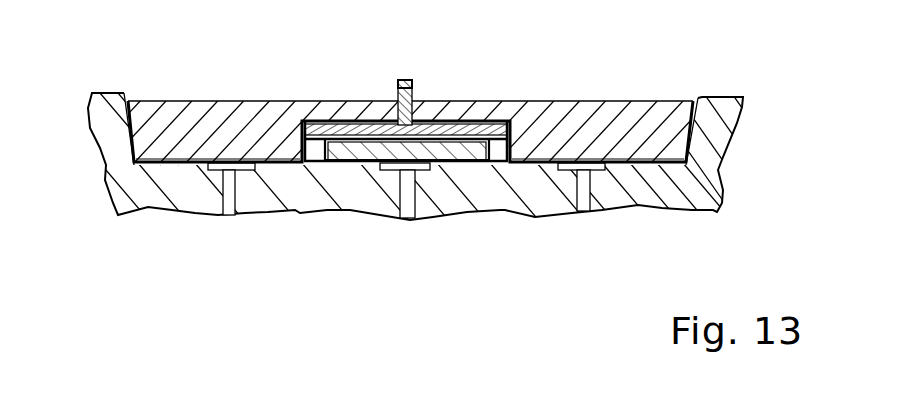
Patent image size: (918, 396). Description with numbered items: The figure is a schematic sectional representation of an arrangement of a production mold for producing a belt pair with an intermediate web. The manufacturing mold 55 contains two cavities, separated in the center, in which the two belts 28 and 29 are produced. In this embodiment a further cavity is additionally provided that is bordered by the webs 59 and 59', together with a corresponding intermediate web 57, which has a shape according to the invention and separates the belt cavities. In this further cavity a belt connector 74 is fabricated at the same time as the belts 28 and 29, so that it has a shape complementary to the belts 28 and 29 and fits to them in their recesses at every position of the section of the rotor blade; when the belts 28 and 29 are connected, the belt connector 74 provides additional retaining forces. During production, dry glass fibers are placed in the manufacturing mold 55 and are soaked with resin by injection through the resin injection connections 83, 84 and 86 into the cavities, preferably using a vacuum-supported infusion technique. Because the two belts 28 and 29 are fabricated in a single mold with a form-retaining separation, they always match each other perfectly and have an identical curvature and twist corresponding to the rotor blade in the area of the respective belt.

The belt 28 is at (223, 127).
The belt 29 is at (590, 122).
The intermediate web 57 is at (402, 82).
The web 59 is at (406, 198).
The web 59' is at (426, 207).
The belt connector 74 is at (376, 150).
The resin injection connection 83 is at (222, 197).
The resin injection connection 84 is at (588, 191).
The resin injection connection 86 is at (412, 211).
The manufacturing mold 55 is at (672, 190).